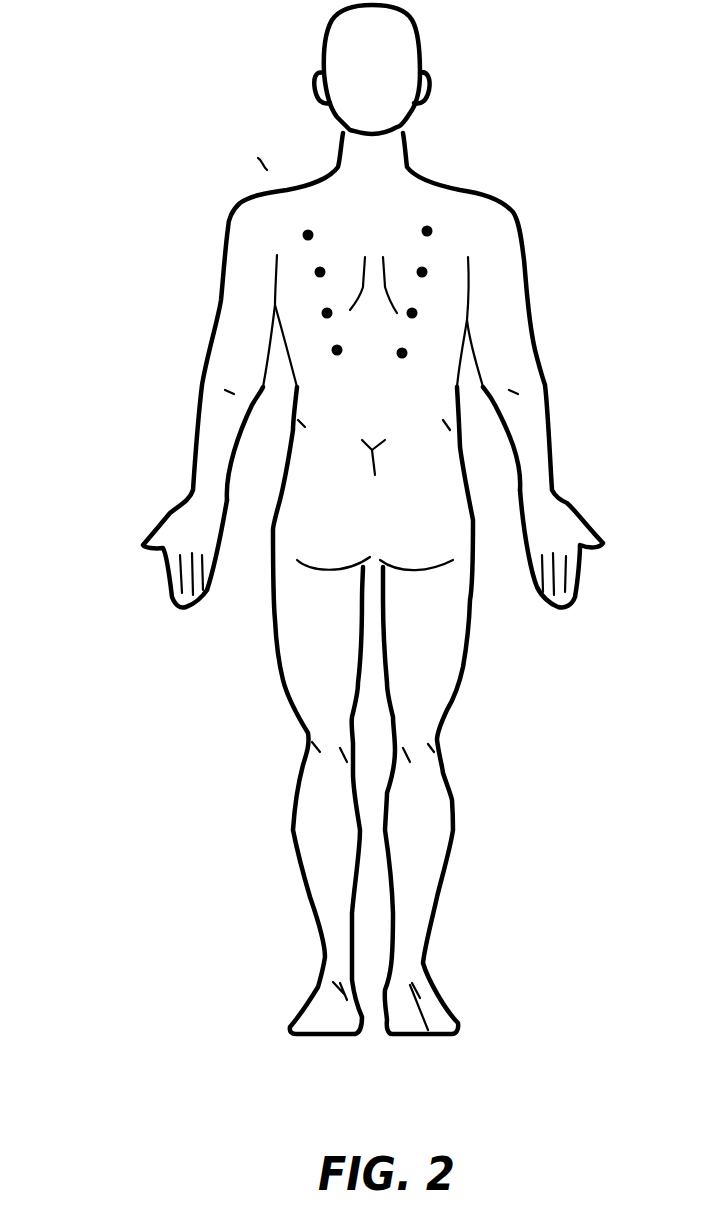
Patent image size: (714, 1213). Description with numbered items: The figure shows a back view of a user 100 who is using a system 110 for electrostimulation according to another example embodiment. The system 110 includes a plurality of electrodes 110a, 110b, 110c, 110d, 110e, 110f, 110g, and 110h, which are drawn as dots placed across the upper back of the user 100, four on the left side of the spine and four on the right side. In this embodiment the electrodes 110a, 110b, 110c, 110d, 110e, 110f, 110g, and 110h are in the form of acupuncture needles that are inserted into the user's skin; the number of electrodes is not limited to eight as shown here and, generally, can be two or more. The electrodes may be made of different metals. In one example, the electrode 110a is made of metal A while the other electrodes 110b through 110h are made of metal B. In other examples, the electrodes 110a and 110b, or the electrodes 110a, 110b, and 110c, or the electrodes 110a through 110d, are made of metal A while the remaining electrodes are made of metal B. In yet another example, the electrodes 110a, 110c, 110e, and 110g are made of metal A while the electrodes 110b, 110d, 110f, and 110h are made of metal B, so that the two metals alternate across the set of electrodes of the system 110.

The user 100 is at (273, 193).
The system for electrostimulation 110 is at (93, 310).
The electrode 110a is at (308, 235).
The electrode 110b is at (320, 272).
The electrode 110c is at (327, 313).
The electrode 110d is at (337, 350).
The electrode 110e is at (427, 231).
The electrode 110f is at (422, 272).
The electrode 110g is at (412, 313).
The electrode 110h is at (402, 353).